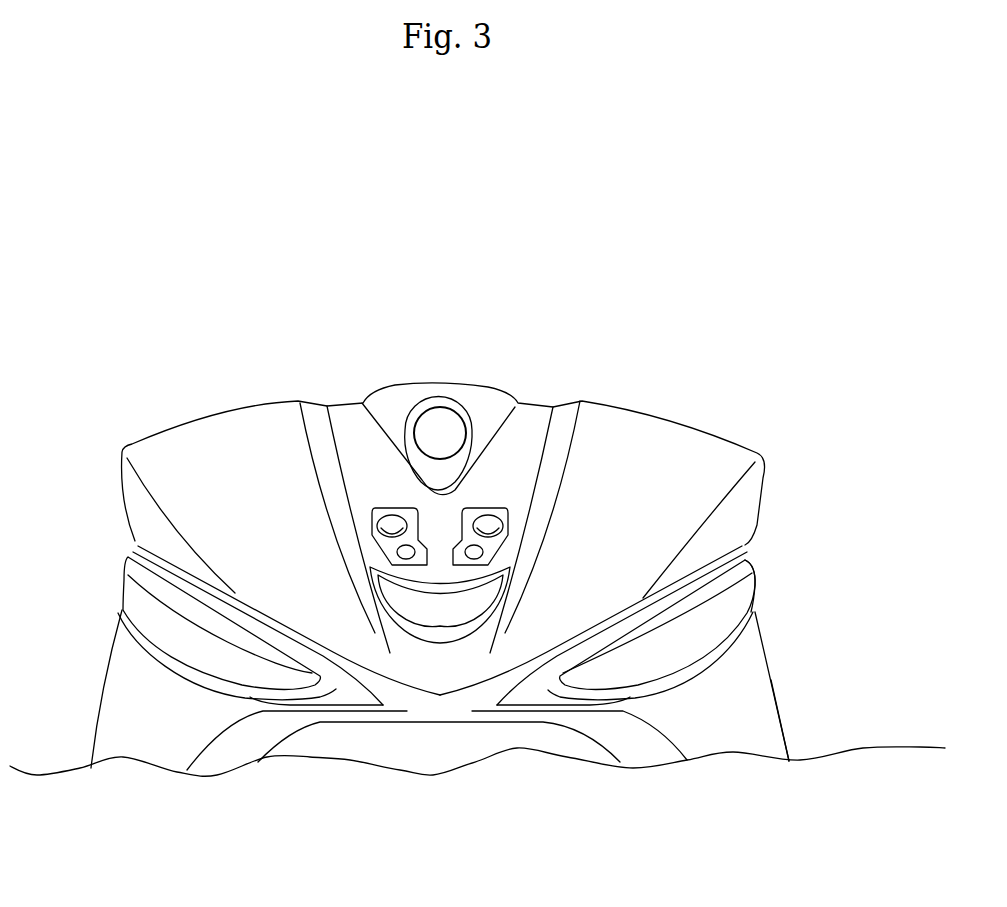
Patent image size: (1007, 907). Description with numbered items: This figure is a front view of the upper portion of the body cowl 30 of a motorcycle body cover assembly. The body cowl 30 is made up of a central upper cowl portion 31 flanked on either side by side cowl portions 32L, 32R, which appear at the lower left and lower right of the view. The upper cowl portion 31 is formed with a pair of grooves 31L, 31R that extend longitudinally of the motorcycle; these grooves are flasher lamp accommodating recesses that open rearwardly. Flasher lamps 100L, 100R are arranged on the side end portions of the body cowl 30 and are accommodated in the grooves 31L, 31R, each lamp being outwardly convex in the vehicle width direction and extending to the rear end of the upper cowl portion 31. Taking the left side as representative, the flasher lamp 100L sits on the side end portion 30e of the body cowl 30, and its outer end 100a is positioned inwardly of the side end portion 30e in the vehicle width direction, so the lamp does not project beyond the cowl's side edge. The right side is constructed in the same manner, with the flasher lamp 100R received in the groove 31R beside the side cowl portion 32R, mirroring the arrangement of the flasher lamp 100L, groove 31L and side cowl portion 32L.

The body cowl 30 is at (712, 352).
The upper cowl portion 31 is at (612, 427).
The groove 31R is at (343, 690).
The groove 31L is at (530, 687).
The flasher lamp 100R is at (175, 679).
The flasher lamp 100L is at (696, 686).
The outer end 100a is at (761, 602).
The side cowl portion 32R is at (113, 713).
The side cowl portion 32L is at (771, 696).
The side end portion 30e is at (800, 746).